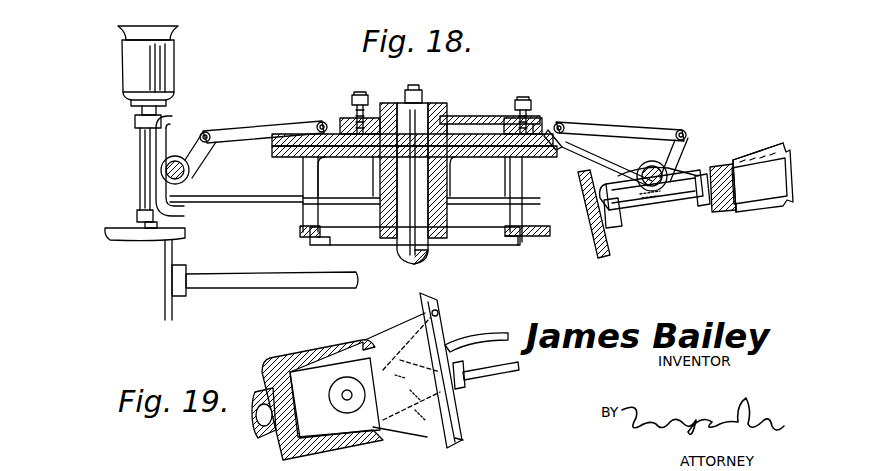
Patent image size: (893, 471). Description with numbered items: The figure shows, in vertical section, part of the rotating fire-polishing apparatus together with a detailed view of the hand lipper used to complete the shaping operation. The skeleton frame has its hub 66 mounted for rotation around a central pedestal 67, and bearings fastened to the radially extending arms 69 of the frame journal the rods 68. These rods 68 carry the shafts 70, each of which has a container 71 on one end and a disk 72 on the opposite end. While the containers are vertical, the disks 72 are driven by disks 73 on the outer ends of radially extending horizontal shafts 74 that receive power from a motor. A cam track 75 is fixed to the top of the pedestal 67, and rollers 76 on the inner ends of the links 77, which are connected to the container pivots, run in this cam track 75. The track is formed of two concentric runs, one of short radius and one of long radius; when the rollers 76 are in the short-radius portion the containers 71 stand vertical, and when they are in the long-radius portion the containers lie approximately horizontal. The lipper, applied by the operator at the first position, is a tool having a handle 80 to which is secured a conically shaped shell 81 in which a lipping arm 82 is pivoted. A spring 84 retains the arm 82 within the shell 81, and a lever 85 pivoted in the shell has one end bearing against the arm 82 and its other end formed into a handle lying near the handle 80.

In FIG. 18, the hub 66 is at (446, 170).
In FIG. 18, the pedestal 67 is at (422, 116).
In FIG. 18, the rod 68 is at (178, 158).
In FIG. 18, the radially extending arm 69 is at (236, 187).
In FIG. 18, the shaft 70 is at (139, 165).
In FIG. 18, the container 71 is at (132, 68).
In FIG. 19, the container 71 is at (338, 345).
In FIG. 18, the disk 72 is at (106, 232).
In FIG. 18, the disk 73 is at (166, 277).
In FIG. 18, the horizontal shaft 74 is at (250, 274).
In FIG. 18, the cam track 75 is at (540, 126).
In FIG. 18, the roller 76 is at (352, 126).
In FIG. 18, the link 77 is at (254, 135).
In FIG. 19, the handle 80 is at (480, 378).
In FIG. 19, the conically shaped shell 81 is at (411, 369).
In FIG. 19, the lipping arm 82 is at (414, 302).
In FIG. 19, the spring 84 is at (446, 412).
In FIG. 19, the lever 85 is at (466, 337).